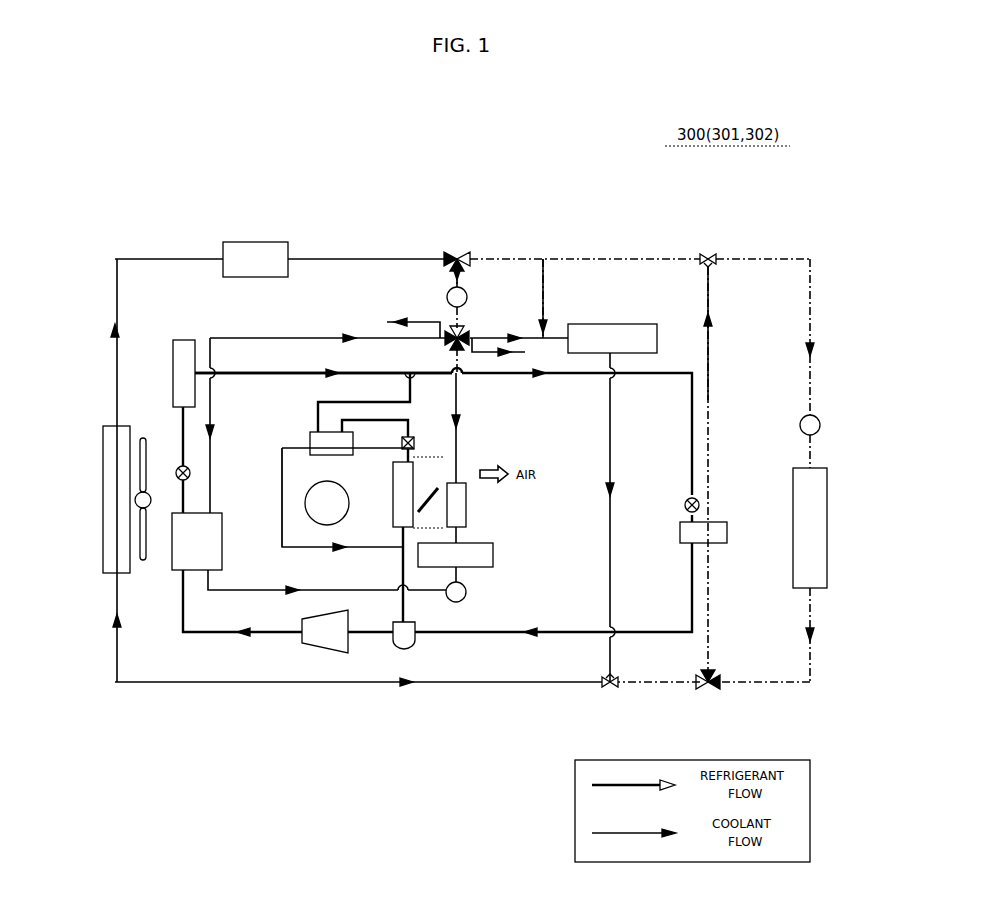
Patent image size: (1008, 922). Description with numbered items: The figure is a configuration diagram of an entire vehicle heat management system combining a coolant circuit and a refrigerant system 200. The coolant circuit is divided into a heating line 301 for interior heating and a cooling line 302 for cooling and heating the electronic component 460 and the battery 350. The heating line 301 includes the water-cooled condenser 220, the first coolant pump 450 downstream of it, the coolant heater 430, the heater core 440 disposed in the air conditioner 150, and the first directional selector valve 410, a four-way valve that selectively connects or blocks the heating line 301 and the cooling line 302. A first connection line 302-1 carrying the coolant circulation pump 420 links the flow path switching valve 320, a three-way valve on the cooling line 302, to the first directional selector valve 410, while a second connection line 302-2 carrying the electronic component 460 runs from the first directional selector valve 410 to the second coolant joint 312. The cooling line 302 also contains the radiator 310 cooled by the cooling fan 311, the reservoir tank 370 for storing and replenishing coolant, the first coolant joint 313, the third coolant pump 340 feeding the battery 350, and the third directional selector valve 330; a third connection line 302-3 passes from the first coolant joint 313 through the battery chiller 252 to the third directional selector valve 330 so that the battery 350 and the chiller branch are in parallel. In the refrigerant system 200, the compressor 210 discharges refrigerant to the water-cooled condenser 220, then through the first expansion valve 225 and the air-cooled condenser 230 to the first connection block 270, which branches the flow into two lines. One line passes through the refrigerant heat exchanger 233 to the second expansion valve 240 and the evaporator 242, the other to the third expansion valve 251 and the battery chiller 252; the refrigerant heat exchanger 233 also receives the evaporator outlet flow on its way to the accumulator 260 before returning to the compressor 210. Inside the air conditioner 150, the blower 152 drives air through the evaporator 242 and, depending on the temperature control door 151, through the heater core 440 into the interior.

The air conditioner 150 is at (338, 484).
The temperature control door 151 is at (420, 470).
The blower 152 is at (282, 500).
The refrigerant system 200 is at (278, 366).
The compressor 210 is at (320, 655).
The water-cooled condenser 220 is at (127, 548).
The first expansion valve 225 is at (172, 473).
The air-cooled condenser 230 is at (183, 340).
The refrigerant heat exchanger 233 is at (312, 432).
The second expansion valve 240 is at (416, 440).
The evaporator 242 is at (386, 532).
The third expansion valve 251 is at (700, 505).
The battery chiller 252 is at (728, 535).
The accumulator 260 is at (408, 650).
The first connection block 270 is at (405, 368).
The heating line 301 is at (313, 334).
The cooling line 302 is at (645, 252).
The first connection line 302-1 is at (448, 272).
The second connection line 302-2 is at (545, 300).
The third connection line 302-3 is at (712, 320).
The radiator 310 is at (103, 495).
The cooling fan 311 is at (167, 542).
The second coolant joint 312 is at (612, 692).
The first coolant joint 313 is at (708, 252).
The flow path switching valve 320 is at (457, 250).
The third directional selector valve 330 is at (718, 688).
The third coolant pump 340 is at (822, 425).
The battery 350 is at (828, 525).
The reservoir tank 370 is at (255, 242).
The first directional selector valve 410 is at (468, 332).
The coolant circulation pump 420 is at (468, 297).
The coolant heater 430 is at (495, 553).
The heater core 440 is at (468, 505).
The first coolant pump 450 is at (468, 592).
The electronic component 460 is at (610, 324).